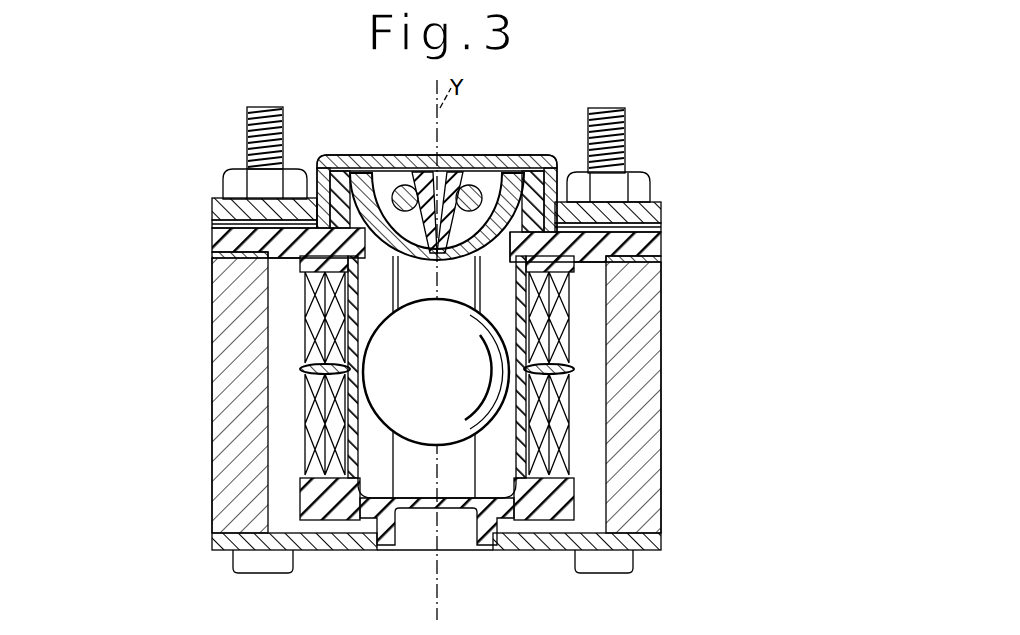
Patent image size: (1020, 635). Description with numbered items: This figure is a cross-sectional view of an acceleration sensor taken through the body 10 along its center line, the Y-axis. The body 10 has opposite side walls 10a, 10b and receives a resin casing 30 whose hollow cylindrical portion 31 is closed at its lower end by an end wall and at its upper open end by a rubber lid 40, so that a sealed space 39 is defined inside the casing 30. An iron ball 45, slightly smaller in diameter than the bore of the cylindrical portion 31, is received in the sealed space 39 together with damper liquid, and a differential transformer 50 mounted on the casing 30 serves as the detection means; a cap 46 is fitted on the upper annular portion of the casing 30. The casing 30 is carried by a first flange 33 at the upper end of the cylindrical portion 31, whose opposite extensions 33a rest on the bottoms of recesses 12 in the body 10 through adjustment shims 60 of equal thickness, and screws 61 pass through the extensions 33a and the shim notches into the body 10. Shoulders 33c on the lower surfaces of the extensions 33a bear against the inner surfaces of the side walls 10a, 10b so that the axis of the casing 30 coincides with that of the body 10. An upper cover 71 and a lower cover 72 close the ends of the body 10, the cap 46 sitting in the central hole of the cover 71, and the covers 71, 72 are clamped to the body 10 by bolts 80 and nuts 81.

The body 10 is at (672, 323).
The side wall 10a is at (223, 377).
The side wall 10b is at (648, 382).
The recess 12 is at (230, 199).
The casing 30 is at (586, 503).
The hollow cylindrical portion 31 is at (520, 420).
The first flange 33 is at (572, 232).
The extension 33a is at (212, 236).
The shoulder 33c is at (267, 256).
The sealed space 39 is at (453, 460).
The lid 40 is at (385, 155).
The iron ball 45 is at (420, 425).
The cap 46 is at (487, 155).
The differential transformer 50 is at (294, 426).
The adjustment shim 60 is at (212, 256).
The screw 61 is at (212, 224).
The cover 71 is at (662, 204).
The cover 72 is at (657, 543).
The bolt 80 is at (625, 565).
The nut 81 is at (637, 182).